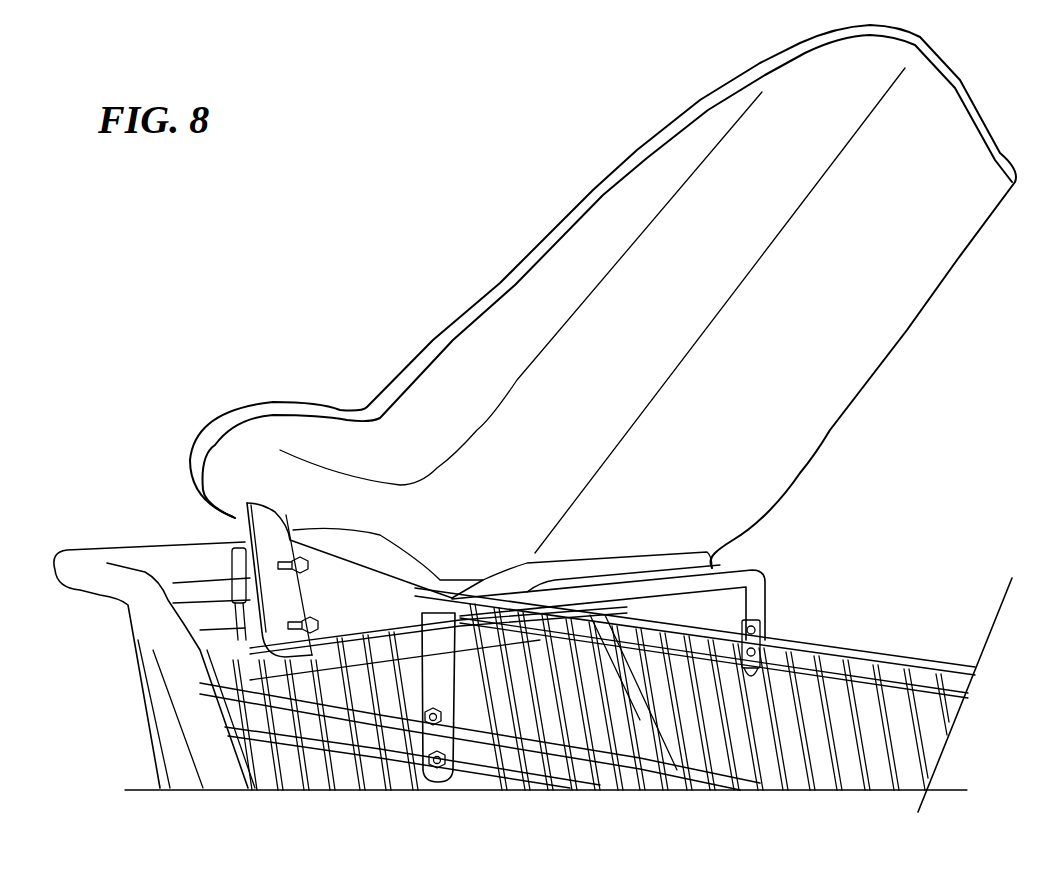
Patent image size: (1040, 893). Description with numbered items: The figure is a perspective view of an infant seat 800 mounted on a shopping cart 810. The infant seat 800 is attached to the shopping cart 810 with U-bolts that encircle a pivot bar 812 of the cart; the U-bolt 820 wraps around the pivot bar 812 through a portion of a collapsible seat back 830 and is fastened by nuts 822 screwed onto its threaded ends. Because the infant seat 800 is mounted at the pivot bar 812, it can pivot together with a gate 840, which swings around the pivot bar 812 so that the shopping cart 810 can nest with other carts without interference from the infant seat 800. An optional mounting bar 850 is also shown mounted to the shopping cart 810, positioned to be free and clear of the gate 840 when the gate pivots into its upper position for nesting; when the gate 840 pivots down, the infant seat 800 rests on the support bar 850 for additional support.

The infant seat 800 is at (597, 232).
The shopping cart 810 is at (917, 662).
The pivot bar 812 is at (193, 600).
The U-bolt 820 is at (247, 580).
The nuts 822 is at (313, 625).
The collapsible seat back 830 is at (247, 641).
The gate 840 is at (227, 657).
The mounting bar 850 is at (763, 598).